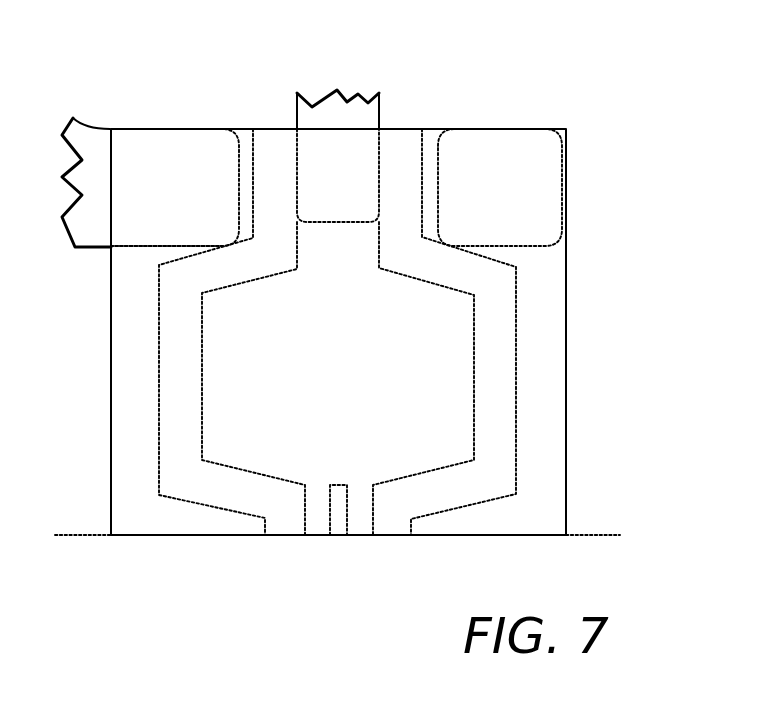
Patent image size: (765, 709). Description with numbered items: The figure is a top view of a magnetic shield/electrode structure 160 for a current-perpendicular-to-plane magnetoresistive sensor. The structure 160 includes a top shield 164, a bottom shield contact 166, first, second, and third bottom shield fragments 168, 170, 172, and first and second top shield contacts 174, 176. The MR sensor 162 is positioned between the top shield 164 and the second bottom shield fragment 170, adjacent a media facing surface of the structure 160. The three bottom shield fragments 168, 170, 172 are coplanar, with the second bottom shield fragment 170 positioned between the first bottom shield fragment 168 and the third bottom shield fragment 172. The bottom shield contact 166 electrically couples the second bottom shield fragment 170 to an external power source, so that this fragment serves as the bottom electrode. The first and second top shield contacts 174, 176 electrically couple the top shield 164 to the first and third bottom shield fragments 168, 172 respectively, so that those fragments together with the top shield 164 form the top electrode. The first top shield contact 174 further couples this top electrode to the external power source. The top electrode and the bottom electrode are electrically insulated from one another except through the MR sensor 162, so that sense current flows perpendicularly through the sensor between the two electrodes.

The magnetic shield/electrode structure 160 is at (625, 101).
The MR sensor 162 is at (338, 528).
The top shield 164 is at (566, 345).
The bottom shield contact 166 is at (367, 110).
The first bottom shield fragment 168 is at (142, 513).
The second bottom shield fragment 170 is at (273, 452).
The third bottom shield fragment 172 is at (500, 513).
The first top shield contact 174 is at (92, 140).
The second top shield contact 176 is at (538, 191).